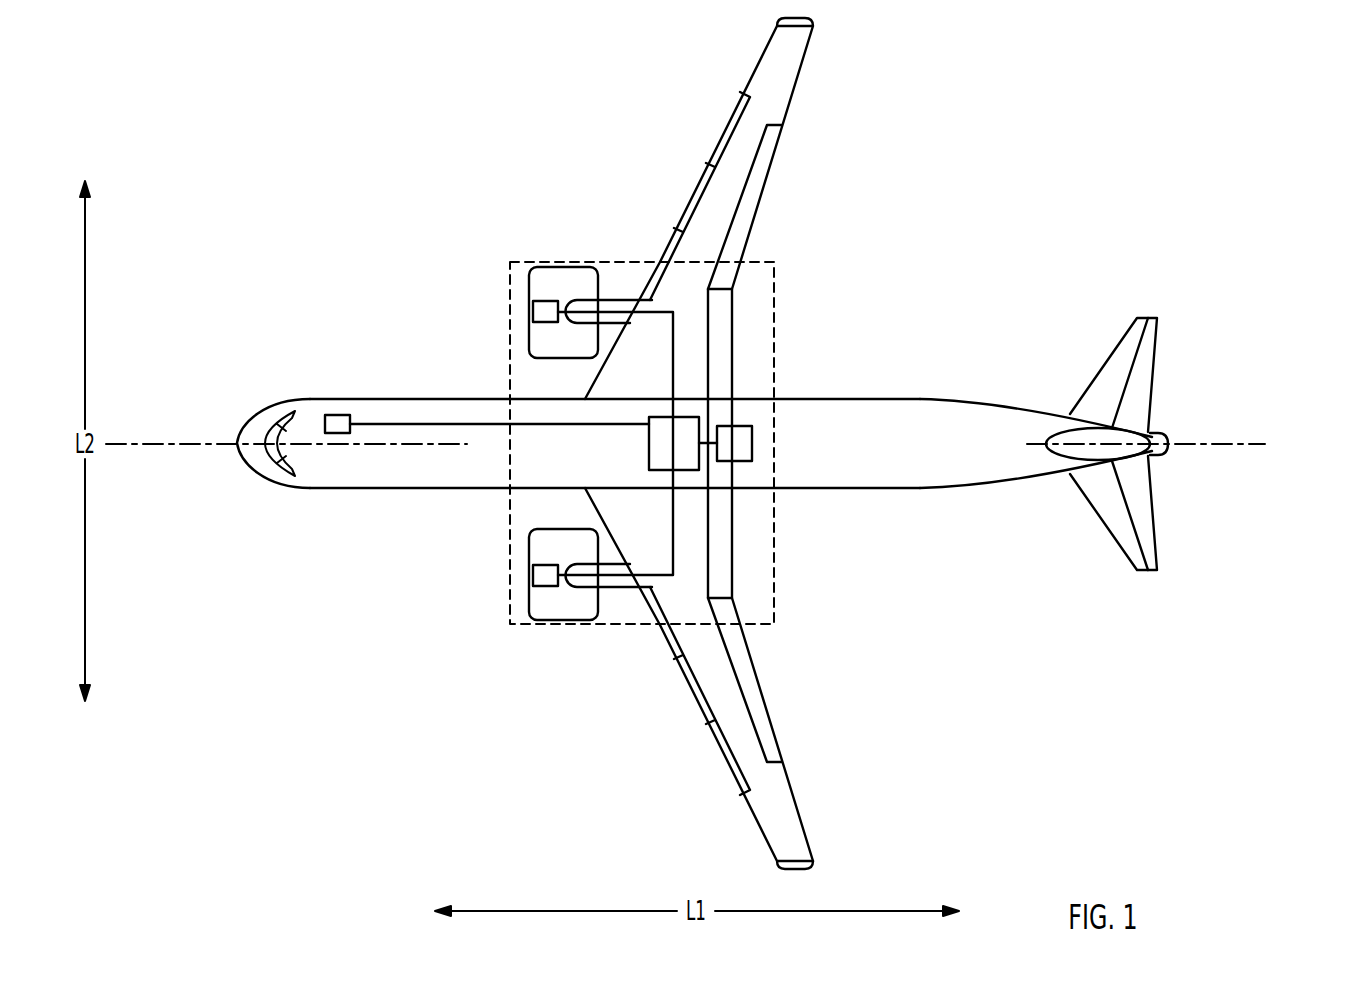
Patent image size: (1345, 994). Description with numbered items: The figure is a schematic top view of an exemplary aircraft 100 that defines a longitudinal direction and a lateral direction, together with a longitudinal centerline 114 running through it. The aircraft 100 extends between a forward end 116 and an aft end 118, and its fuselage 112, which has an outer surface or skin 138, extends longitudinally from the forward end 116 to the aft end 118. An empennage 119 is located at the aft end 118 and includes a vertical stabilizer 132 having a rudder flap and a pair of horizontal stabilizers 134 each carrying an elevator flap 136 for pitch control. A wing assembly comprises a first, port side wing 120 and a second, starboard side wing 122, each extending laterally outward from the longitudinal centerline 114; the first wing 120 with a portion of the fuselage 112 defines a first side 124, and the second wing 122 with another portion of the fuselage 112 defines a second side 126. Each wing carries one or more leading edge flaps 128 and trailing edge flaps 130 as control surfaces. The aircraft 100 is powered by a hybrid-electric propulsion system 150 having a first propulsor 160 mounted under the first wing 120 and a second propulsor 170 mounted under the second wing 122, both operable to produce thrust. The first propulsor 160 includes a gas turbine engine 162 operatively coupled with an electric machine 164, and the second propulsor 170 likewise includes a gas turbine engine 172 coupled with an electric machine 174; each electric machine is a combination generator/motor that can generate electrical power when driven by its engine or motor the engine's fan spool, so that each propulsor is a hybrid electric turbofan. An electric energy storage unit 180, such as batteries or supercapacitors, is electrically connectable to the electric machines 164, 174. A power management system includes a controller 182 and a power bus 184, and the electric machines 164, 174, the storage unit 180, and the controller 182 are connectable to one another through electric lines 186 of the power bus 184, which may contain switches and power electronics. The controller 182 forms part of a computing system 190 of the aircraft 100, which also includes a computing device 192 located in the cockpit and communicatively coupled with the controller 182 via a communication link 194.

The aircraft 100 is at (995, 156).
The fuselage 112 is at (674, 485).
The longitudinal centerline 114 is at (164, 456).
The forward end 116 is at (226, 497).
The aft end 118 is at (1098, 565).
The empennage 119 is at (1151, 452).
The first wing 120 is at (711, 678).
The second wing 122 is at (786, 75).
The first side 124 is at (554, 607).
The second side 126 is at (539, 264).
The leading edge flaps 128 is at (695, 696).
The trailing edge flaps 130 is at (768, 705).
The vertical stabilizer 132 is at (1163, 452).
The horizontal stabilizers 134 is at (1108, 345).
The elevator flap 136 is at (1147, 362).
The outer surface or skin 138 is at (896, 465).
The hybrid-electric propulsion system 150 is at (677, 443).
The first propulsor 160 is at (554, 586).
The gas turbine engine 162 is at (545, 567).
The electric machine 164 is at (537, 531).
The second propulsor 170 is at (549, 264).
The gas turbine engine 172 is at (531, 286).
The electric machine 174 is at (545, 323).
The electric energy storage unit 180 is at (743, 445).
The controller 182 is at (648, 436).
The power bus 184 is at (702, 322).
The electric lines 186 is at (673, 345).
The computing system 190 is at (480, 357).
The computing device 192 is at (333, 414).
The communication link 194 is at (432, 423).